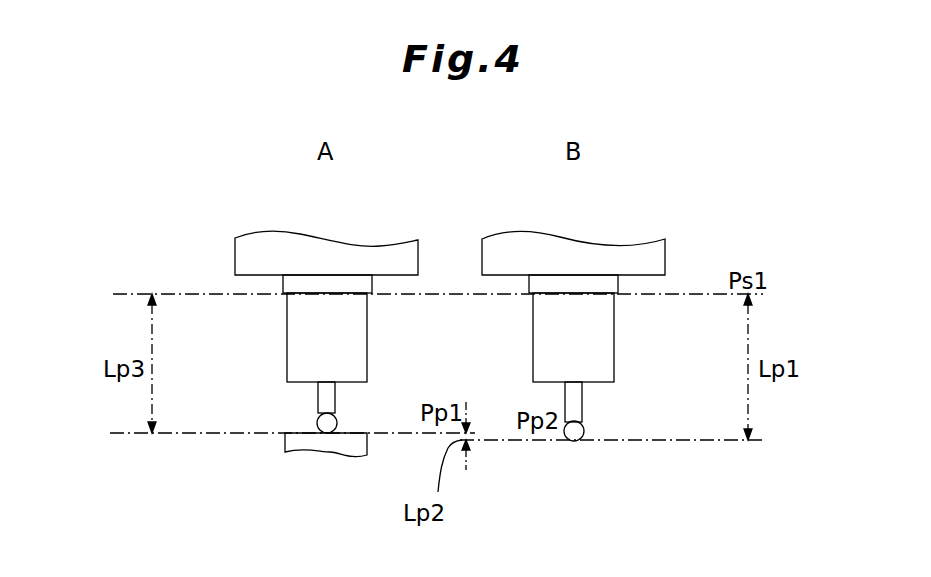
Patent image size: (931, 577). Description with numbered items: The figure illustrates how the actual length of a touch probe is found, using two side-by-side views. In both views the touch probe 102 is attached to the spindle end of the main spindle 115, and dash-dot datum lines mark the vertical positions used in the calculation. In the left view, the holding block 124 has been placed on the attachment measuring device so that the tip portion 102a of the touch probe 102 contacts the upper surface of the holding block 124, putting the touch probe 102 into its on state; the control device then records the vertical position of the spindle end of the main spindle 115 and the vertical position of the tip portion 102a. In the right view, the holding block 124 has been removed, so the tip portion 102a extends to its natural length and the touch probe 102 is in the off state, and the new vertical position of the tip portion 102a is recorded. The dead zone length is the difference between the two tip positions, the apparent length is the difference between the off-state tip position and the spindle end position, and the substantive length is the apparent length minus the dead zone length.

The main spindle 115 is at (283, 284).
The touch probe 102 is at (320, 402).
The tip portion 102a is at (330, 433).
The holding block 124 is at (285, 440).